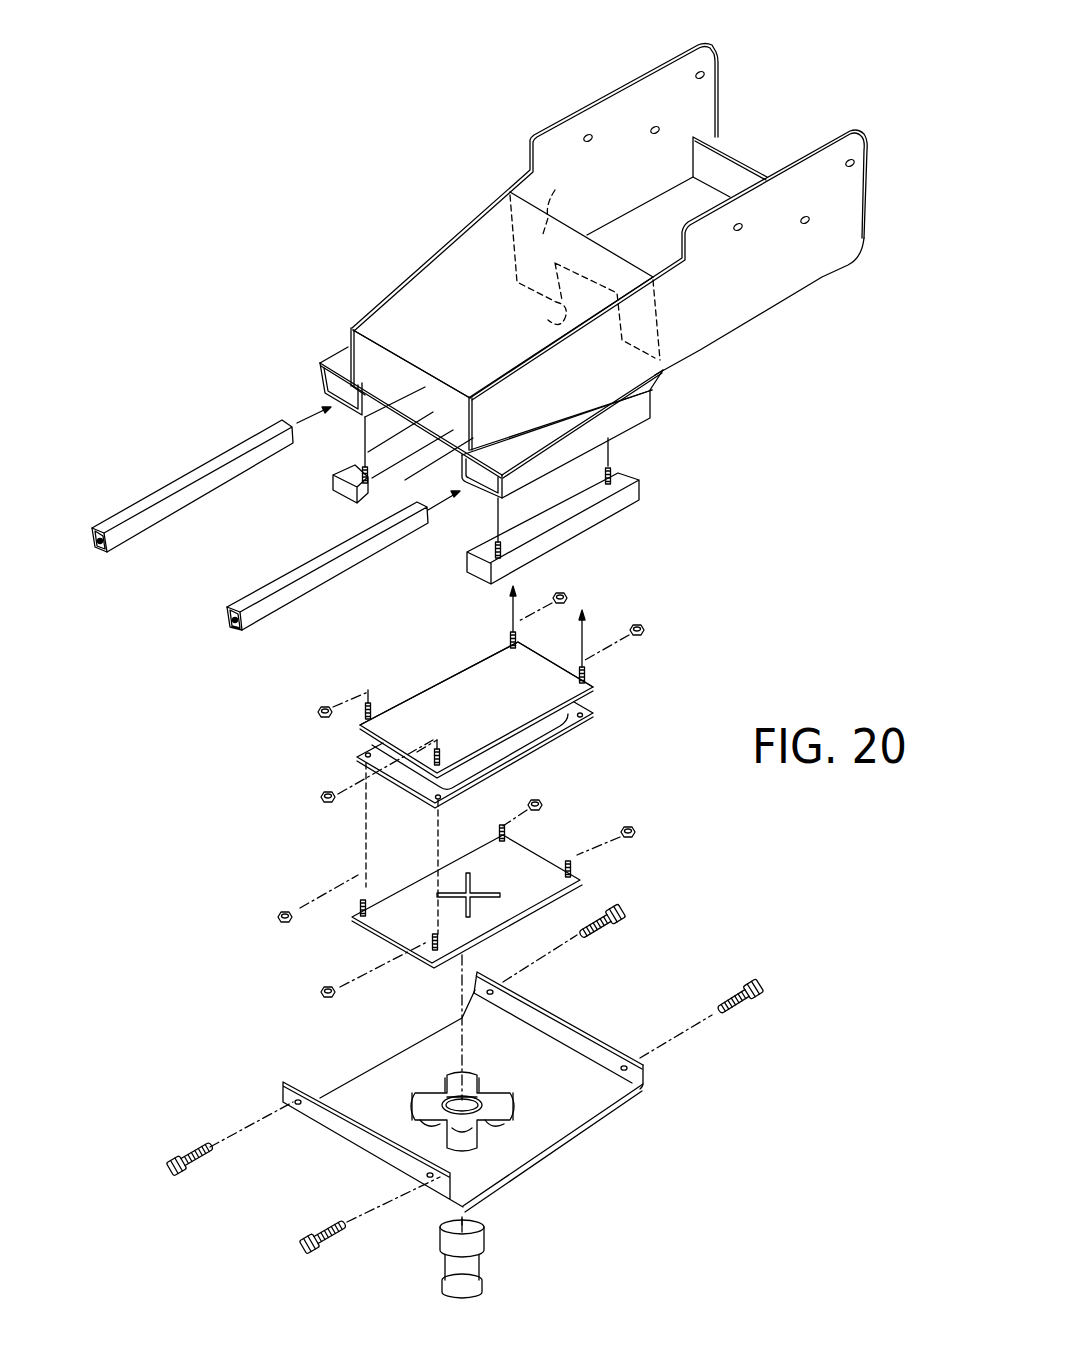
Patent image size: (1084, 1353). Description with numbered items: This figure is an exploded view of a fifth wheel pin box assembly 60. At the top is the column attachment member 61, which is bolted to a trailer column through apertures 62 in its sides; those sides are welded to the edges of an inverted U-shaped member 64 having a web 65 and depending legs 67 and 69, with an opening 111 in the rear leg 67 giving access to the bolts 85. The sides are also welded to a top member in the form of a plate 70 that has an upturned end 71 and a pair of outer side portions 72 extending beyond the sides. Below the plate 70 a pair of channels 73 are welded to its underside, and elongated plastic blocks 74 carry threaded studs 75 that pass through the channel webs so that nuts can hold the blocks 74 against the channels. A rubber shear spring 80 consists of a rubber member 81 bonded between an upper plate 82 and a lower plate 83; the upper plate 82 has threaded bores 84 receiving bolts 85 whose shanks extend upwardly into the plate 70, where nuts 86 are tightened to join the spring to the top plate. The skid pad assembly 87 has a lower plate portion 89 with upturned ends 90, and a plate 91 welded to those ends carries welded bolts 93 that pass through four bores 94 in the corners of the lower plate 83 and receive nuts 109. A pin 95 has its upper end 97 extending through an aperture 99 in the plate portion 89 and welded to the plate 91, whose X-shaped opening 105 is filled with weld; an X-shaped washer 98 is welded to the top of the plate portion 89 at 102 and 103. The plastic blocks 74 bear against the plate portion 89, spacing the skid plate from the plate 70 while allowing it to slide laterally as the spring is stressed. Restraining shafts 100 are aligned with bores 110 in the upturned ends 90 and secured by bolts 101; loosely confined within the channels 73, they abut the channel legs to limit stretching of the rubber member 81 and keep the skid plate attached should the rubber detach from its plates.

The fifth wheel pin box assembly 60 is at (788, 80).
The column attachment member 61 is at (790, 282).
The apertures 62 is at (700, 77).
The inverted U-shaped member 64 is at (500, 233).
The web 65 is at (428, 287).
The rear leg 67 is at (556, 198).
The depending leg 69 is at (345, 352).
The top member plate 70 is at (642, 238).
The upturned end 71 is at (740, 157).
The outer side portions 72 is at (342, 358).
The channels 73 is at (322, 368).
The elongated plastic blocks 74 is at (340, 497).
The threaded studs 75 is at (358, 470).
The rubber shear spring 80 is at (445, 688).
The rubber member 81 is at (382, 825).
The upper plate 82 is at (490, 660).
The lower plate 83 is at (518, 752).
The threaded bores 84 is at (380, 723).
The bolts 85 is at (510, 636).
The nuts 86 is at (640, 625).
The skid pad assembly 87 is at (595, 1134).
The lower plate portion 89 is at (605, 1115).
The upturned ends 90 is at (640, 1100).
The plate 91 is at (533, 908).
The bolts 93 is at (506, 833).
The bores 94 is at (365, 755).
The pin 95 is at (487, 1244).
The upper end of pin 97 is at (488, 1228).
The X-shaped washer 98 is at (430, 1090).
The aperture 99 is at (478, 1093).
The restraining shafts 100 is at (208, 462).
The bolts 101 is at (625, 914).
The weld location 102 is at (405, 1097).
The weld location 103 is at (430, 1085).
The X-shaped opening 105 is at (468, 884).
The nuts 109 is at (550, 806).
The bores 110 is at (500, 993).
The opening 111 is at (546, 320).